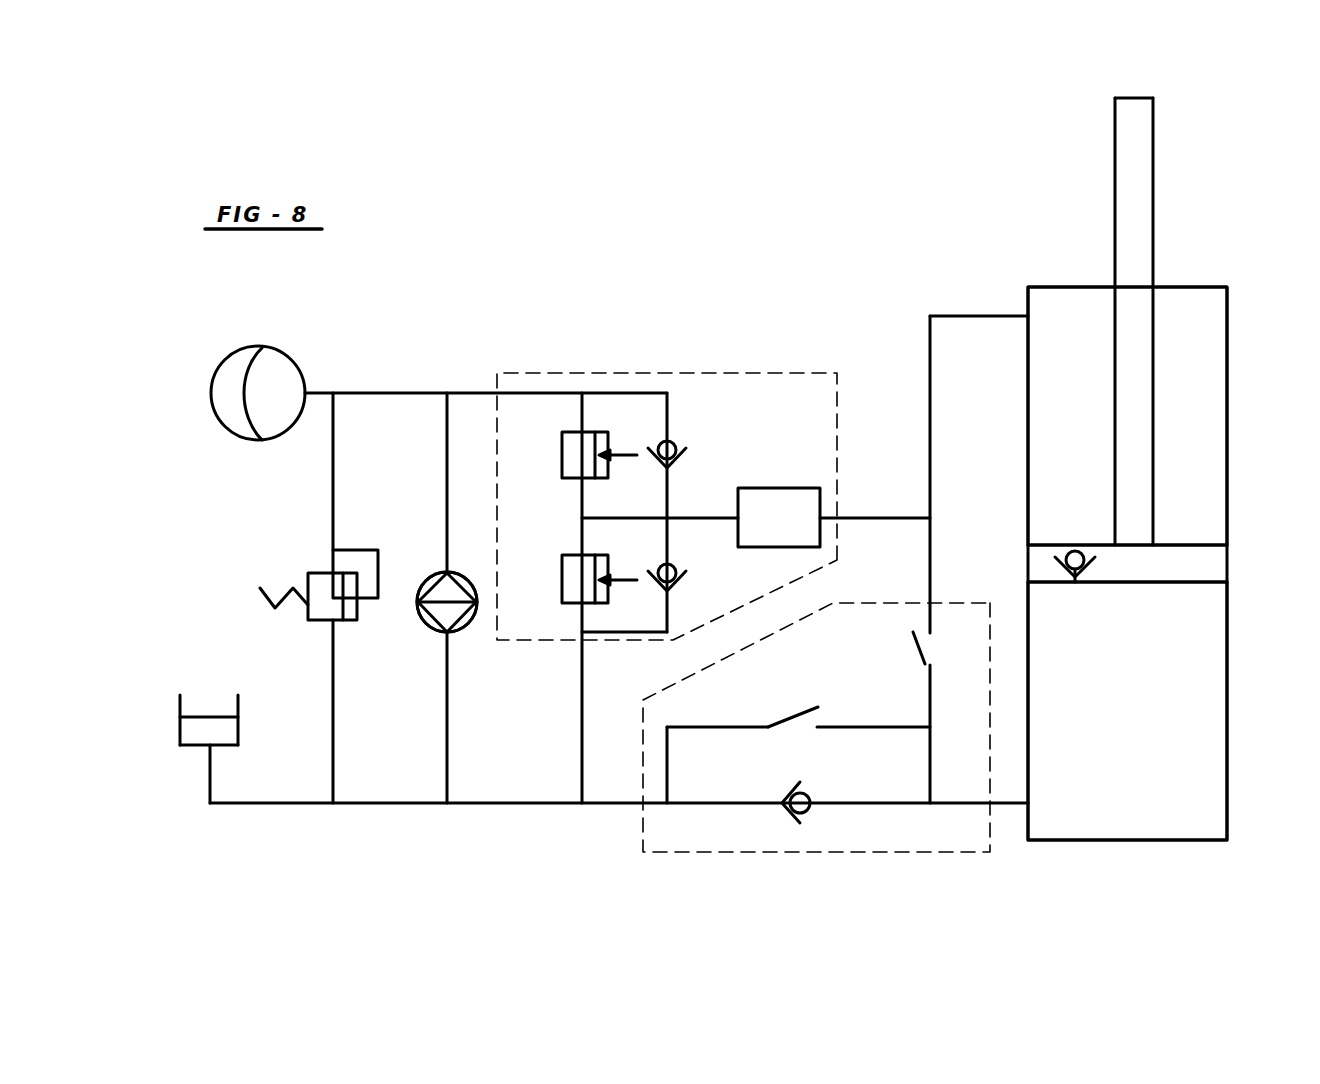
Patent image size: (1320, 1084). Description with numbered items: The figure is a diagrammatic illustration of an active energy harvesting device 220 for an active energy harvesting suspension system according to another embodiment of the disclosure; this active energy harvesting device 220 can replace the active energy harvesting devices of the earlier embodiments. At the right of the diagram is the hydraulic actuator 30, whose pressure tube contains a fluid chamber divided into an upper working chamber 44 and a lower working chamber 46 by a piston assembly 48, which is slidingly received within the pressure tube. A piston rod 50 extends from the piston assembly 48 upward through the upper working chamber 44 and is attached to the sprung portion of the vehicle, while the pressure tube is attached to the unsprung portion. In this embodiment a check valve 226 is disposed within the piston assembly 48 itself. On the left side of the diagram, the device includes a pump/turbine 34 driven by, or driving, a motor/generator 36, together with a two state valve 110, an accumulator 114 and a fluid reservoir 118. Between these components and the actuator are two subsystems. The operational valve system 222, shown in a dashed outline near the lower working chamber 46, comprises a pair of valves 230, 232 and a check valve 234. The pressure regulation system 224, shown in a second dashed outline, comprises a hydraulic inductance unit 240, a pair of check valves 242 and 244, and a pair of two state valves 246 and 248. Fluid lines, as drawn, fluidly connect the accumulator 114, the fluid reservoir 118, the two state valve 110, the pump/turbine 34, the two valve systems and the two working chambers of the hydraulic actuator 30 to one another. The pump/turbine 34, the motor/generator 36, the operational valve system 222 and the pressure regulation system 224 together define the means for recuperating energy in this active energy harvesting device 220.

The hydraulic actuator 30 is at (1205, 882).
The pump/turbine 34 is at (432, 627).
The motor/generator 36 is at (433, 575).
The upper working chamber 44 is at (1196, 413).
The lower working chamber 46 is at (1135, 746).
The piston assembly 48 is at (1197, 565).
The piston rod 50 is at (1130, 183).
The two state valve 110 is at (316, 620).
The accumulator 114 is at (210, 392).
The fluid reservoir 118 is at (180, 733).
The active energy harvesting device 220 is at (908, 230).
The operational valve system 222 is at (830, 852).
The pressure regulation system 224 is at (600, 373).
The check valve 226 is at (1070, 553).
The valve 230 is at (918, 657).
The valve 232 is at (798, 710).
The check valve 234 is at (787, 817).
The hydraulic inductance unit 240 is at (787, 488).
The check valve 242 is at (672, 440).
The check valve 244 is at (675, 565).
The two state valve 246 is at (570, 452).
The two state valve 248 is at (580, 593).